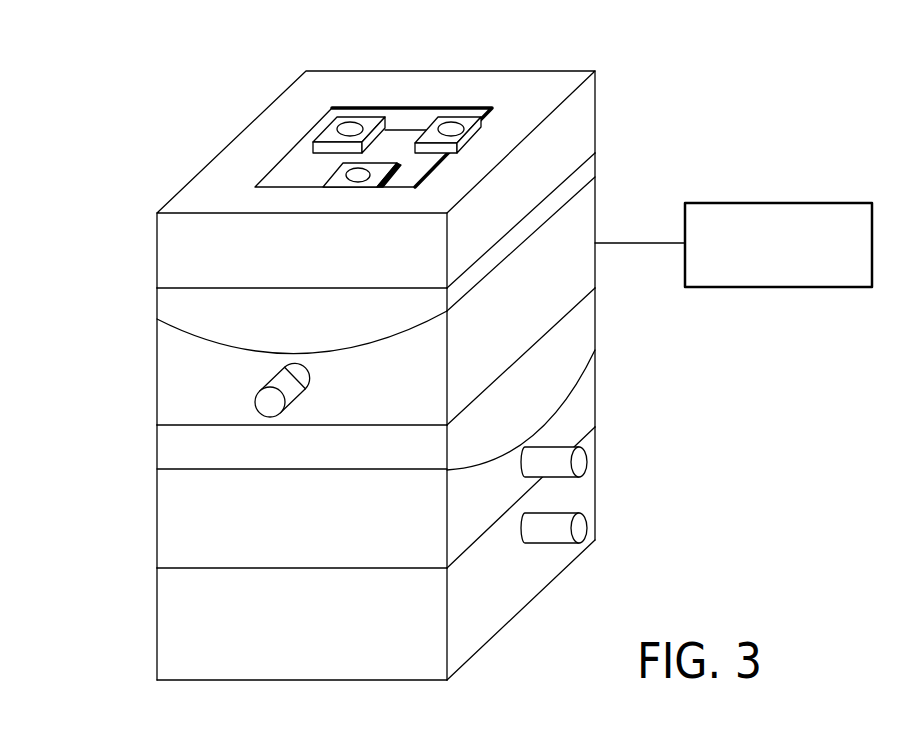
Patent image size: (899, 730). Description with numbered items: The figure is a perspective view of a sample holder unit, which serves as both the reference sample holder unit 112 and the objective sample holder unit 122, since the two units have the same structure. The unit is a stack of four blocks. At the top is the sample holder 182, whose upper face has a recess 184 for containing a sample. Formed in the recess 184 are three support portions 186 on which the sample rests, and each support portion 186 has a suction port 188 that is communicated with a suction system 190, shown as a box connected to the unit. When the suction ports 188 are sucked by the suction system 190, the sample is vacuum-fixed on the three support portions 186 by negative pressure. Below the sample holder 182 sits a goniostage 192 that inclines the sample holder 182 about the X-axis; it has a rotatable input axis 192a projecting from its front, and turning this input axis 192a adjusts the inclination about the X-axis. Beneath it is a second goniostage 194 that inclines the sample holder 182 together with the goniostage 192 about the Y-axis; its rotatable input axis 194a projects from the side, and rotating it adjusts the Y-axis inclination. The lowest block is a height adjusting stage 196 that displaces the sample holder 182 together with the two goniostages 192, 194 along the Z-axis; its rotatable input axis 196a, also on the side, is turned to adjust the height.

The reference sample holder unit 112 is at (362, 347).
The objective sample holder unit 122 is at (133, 203).
The sample holder 182 is at (157, 259).
The recess 184 is at (283, 155).
The support portions 186 is at (427, 130).
The suction port 188 is at (350, 127).
The suction system 190 is at (785, 288).
The goniostage 192 is at (157, 368).
The input axis 192a is at (288, 392).
The goniostage 194 is at (157, 518).
The input axis 194a is at (583, 462).
The height adjusting stage 196 is at (157, 615).
The input axis 196a is at (583, 528).